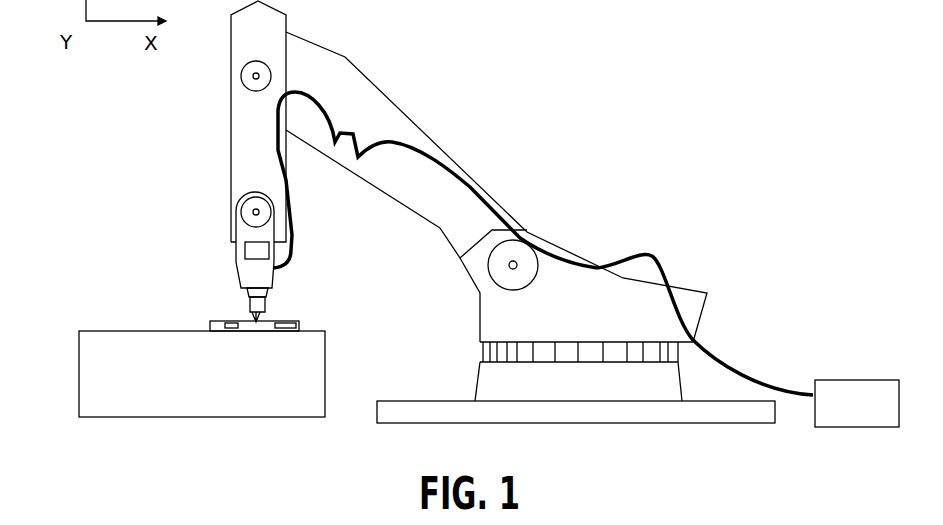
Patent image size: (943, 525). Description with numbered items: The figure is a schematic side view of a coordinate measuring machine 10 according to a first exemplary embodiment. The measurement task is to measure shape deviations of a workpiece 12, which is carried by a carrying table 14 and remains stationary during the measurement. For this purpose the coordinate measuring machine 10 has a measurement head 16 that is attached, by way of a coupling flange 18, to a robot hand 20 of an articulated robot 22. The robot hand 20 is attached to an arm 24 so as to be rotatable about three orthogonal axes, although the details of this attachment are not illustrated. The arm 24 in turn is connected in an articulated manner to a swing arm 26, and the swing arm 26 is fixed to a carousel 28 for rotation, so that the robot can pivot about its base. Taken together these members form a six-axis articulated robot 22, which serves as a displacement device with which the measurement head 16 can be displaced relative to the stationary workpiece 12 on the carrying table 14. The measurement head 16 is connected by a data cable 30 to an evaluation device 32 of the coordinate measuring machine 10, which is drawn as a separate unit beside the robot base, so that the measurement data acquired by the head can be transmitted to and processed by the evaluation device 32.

The coordinate measuring machine 10 is at (702, 172).
The workpiece 12 is at (219, 321).
The carrying table 14 is at (84, 366).
The measurement head 16 is at (265, 305).
The coupling flange 18 is at (270, 288).
The robot hand 20 is at (247, 277).
The articulated robot 22 is at (495, 170).
The arm 24 is at (240, 123).
The swing arm 26 is at (408, 130).
The carousel 28 is at (474, 351).
The data cable 30 is at (733, 360).
The evaluation device 32 is at (872, 388).